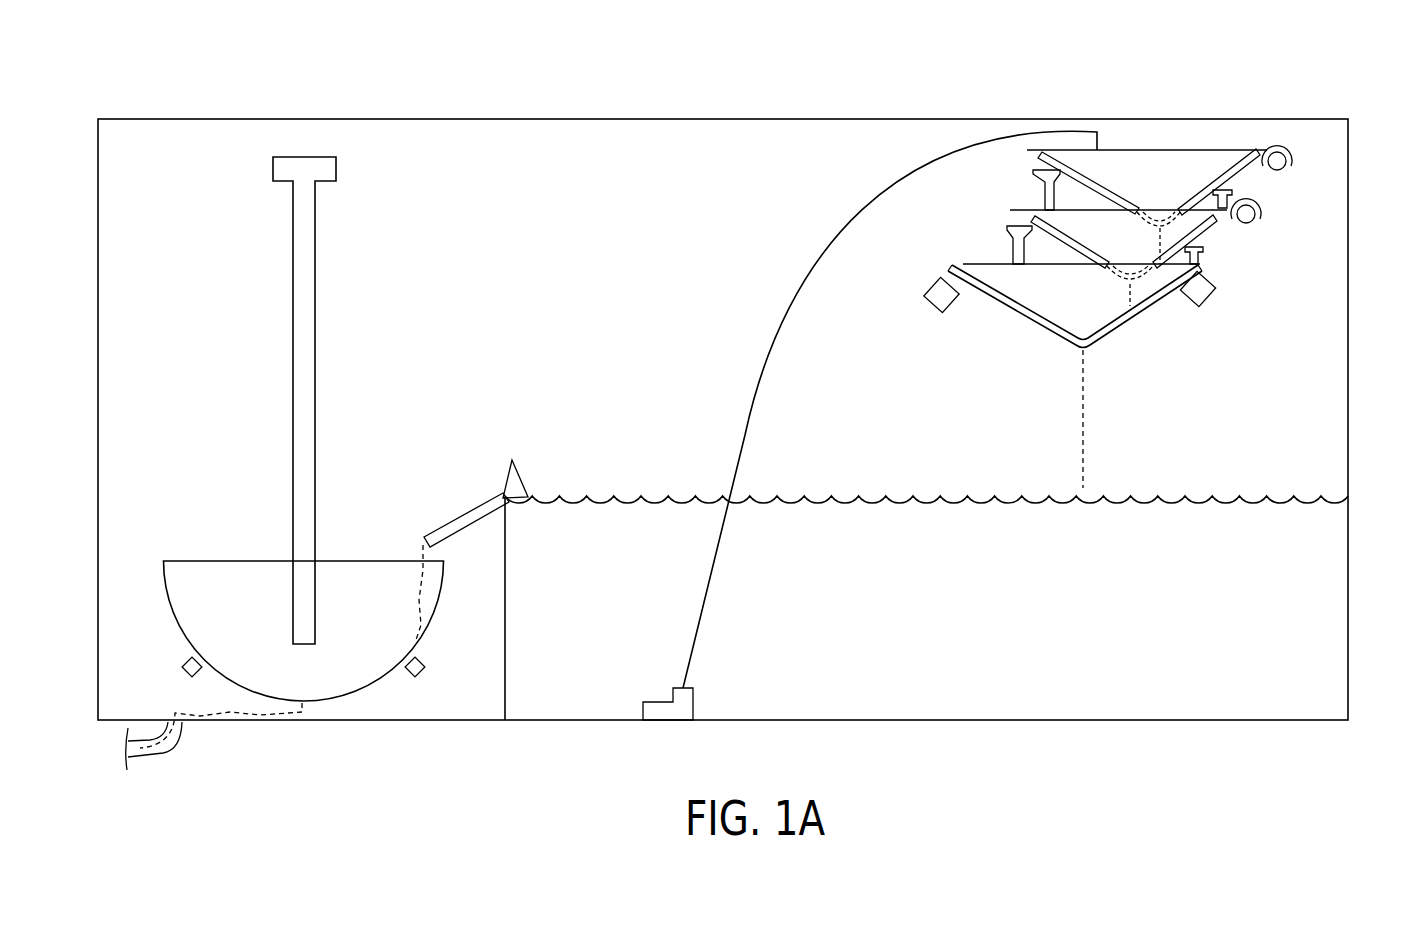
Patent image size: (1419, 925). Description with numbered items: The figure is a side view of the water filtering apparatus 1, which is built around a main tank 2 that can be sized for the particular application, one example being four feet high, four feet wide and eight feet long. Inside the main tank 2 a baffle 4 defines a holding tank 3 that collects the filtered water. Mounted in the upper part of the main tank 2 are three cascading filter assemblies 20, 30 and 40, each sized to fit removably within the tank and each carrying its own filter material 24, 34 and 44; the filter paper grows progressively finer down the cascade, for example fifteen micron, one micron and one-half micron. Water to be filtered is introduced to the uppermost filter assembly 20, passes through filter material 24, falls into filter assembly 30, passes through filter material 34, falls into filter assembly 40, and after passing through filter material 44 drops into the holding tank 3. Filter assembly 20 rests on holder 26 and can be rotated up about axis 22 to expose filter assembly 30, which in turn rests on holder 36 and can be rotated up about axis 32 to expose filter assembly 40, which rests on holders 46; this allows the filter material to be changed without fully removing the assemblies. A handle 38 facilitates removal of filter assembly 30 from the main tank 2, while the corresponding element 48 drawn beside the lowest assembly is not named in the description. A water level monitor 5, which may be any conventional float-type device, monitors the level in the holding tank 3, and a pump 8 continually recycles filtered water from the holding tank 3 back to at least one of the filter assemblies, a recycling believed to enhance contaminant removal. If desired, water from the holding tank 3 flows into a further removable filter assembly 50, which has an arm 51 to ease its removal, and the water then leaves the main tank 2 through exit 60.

The water filtering apparatus 1 is at (606, 76).
The main tank 2 is at (1348, 418).
The holding tank 3 is at (948, 634).
The baffle 4 is at (506, 630).
The water level monitor 5 is at (525, 485).
The pump 8 is at (693, 705).
The filter assembly 20 is at (1037, 158).
The axis 22 is at (1287, 163).
The filter material 24 is at (1243, 167).
The holder 26 is at (1040, 185).
The filter assembly 30 is at (1030, 220).
The axis 32 is at (1258, 217).
The filter material 34 is at (1215, 225).
The holder 36 is at (1012, 238).
The handle 38 is at (1233, 193).
The filter assembly 40 is at (955, 265).
The filter material 44 is at (1147, 307).
The holders 46 is at (930, 305).
The lower bracket 48 is at (1203, 255).
The filter assembly 50 is at (228, 560).
The arm 51 is at (315, 280).
The exit 60 is at (175, 743).